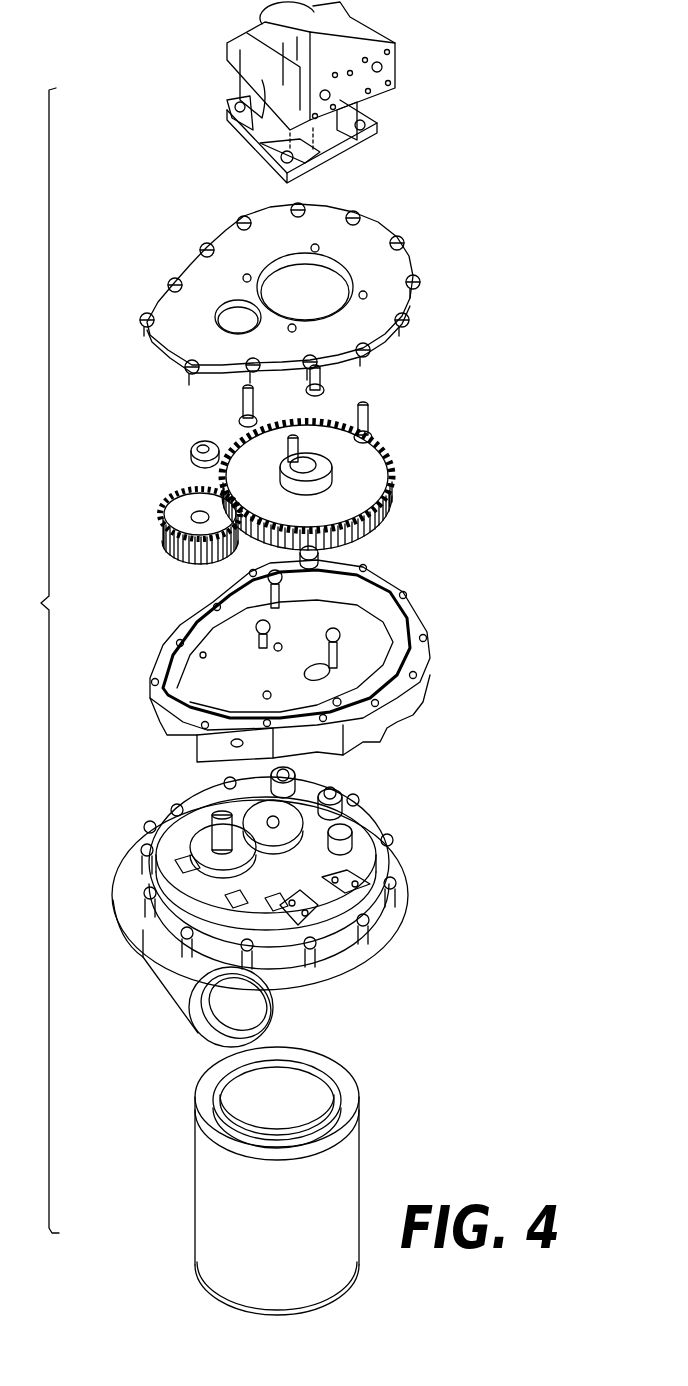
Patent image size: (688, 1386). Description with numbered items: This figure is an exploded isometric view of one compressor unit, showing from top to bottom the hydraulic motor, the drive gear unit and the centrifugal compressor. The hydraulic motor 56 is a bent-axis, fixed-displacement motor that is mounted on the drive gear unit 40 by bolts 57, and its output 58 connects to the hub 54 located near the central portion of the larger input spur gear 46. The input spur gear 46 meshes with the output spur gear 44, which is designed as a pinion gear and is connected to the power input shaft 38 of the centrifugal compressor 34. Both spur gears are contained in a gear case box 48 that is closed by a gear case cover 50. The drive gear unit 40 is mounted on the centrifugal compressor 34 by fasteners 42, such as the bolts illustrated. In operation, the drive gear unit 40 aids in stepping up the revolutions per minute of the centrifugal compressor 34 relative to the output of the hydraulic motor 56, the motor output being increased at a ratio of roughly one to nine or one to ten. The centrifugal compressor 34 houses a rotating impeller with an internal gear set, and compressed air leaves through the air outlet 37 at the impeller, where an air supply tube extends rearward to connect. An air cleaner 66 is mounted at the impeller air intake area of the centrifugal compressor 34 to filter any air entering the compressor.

The centrifugal compressor 34 is at (418, 829).
The air outlet 37 is at (262, 1010).
The power input shaft 38 is at (223, 832).
The drive gear unit 40 is at (450, 547).
The fasteners 42 is at (343, 633).
The output spur gear 44 is at (162, 507).
The input spur gear 46 is at (373, 478).
The gear case box 48 is at (413, 695).
The gear case cover 50 is at (424, 296).
The hub 54 is at (330, 482).
The hydraulic motor 56 is at (228, 106).
The bolts 57 is at (372, 440).
The output 58 is at (323, 163).
The air cleaner 66 is at (358, 1113).